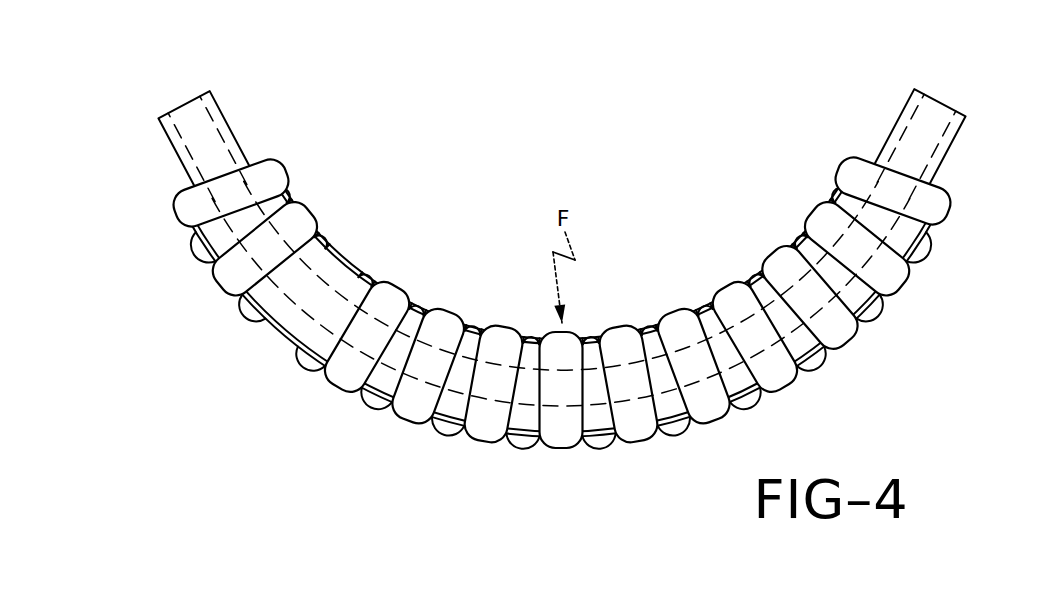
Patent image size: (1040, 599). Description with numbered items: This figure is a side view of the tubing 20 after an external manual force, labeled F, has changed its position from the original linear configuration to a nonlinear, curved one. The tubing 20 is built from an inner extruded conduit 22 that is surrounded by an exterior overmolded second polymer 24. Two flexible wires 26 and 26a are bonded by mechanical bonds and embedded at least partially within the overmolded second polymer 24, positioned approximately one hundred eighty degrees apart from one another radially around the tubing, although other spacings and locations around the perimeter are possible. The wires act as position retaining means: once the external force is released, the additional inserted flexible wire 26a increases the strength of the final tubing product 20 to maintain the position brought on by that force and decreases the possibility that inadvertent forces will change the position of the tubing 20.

The tubing 20 is at (591, 231).
The inner extruded conduit 22 is at (942, 100).
The overmolded second polymer 24 is at (850, 157).
The flexible wire 26 is at (797, 237).
The flexible wire 26a is at (922, 253).